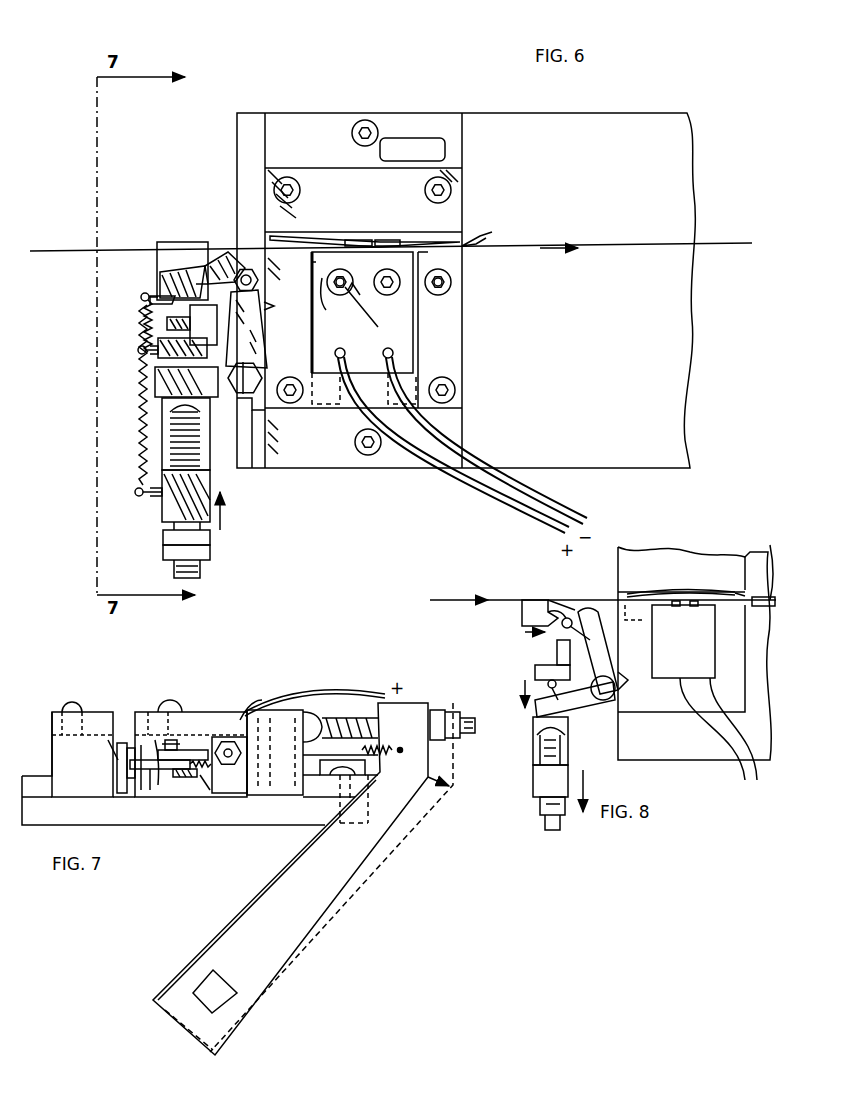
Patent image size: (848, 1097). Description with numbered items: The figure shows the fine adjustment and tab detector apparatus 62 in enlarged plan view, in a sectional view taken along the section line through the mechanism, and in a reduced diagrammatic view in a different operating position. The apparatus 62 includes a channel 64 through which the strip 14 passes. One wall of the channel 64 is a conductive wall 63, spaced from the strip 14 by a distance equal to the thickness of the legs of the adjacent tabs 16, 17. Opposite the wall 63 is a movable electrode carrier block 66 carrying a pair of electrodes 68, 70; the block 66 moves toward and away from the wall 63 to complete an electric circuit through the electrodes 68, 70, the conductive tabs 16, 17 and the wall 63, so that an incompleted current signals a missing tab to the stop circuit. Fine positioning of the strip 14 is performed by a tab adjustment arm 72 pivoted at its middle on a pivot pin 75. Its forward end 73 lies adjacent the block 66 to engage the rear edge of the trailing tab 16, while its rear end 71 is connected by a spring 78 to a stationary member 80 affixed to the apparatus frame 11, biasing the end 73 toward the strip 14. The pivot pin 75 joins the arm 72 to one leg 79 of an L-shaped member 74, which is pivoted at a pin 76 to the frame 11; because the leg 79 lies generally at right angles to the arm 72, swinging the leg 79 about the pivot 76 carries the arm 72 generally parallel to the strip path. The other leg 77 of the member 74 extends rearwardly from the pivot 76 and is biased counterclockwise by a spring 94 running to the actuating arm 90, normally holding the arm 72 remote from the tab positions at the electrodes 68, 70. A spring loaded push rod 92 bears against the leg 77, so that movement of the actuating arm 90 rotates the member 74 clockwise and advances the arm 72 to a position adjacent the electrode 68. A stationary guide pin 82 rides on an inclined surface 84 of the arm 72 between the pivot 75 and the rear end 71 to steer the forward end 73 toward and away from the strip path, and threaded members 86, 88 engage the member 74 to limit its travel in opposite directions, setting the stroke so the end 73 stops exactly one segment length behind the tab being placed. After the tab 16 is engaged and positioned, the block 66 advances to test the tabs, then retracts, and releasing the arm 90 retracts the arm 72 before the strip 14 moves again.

In FIG. 6, the apparatus frame 11 is at (252, 455).
In FIG. 7, the apparatus frame 11 is at (284, 815).
In FIG. 6, the strip 14 is at (618, 244).
In FIG. 7, the strip 14 is at (118, 750).
In FIG. 8, the strip 14 is at (442, 604).
In FIG. 6, the tab 16 is at (356, 240).
In FIG. 7, the tab 16 is at (128, 792).
In FIG. 8, the tab 16 is at (760, 597).
In FIG. 6, the tab 17 is at (380, 240).
In FIG. 8, the tab 17 is at (770, 570).
In FIG. 6, the fine adjustment and tab detector apparatus 62 is at (485, 108).
In FIG. 7, the fine adjustment and tab detector apparatus 62 is at (190, 702).
In FIG. 8, the fine adjustment and tab detector apparatus 62 is at (687, 545).
In FIG. 6, the conductive wall 63 is at (345, 246).
In FIG. 7, the conductive wall 63 is at (117, 756).
In FIG. 8, the conductive wall 63 is at (698, 594).
In FIG. 6, the channel 64 is at (475, 242).
In FIG. 7, the channel 64 is at (125, 735).
In FIG. 8, the channel 64 is at (738, 592).
In FIG. 6, the movable electrode carrier block 66 is at (412, 300).
In FIG. 7, the movable electrode carrier block 66 is at (138, 745).
In FIG. 8, the movable electrode carrier block 66 is at (694, 664).
In FIG. 6, the electrode 68 is at (354, 276).
In FIG. 7, the electrode 68 is at (156, 745).
In FIG. 8, the electrode 68 is at (675, 608).
In FIG. 6, the electrode 70 is at (410, 258).
In FIG. 8, the electrode 70 is at (693, 608).
In FIG. 6, the rear end of tab adjustment arm 71 is at (150, 294).
In FIG. 7, the rear end of tab adjustment arm 71 is at (176, 780).
In FIG. 8, the rear end of tab adjustment arm 71 is at (520, 622).
In FIG. 6, the tab adjustment arm 72 is at (188, 272).
In FIG. 7, the tab adjustment arm 72 is at (160, 770).
In FIG. 8, the tab adjustment arm 72 is at (566, 604).
In FIG. 6, the forward end of tab adjustment arm 73 is at (324, 294).
In FIG. 7, the forward end of tab adjustment arm 73 is at (145, 792).
In FIG. 8, the forward end of tab adjustment arm 73 is at (636, 590).
In FIG. 6, the L-shaped member 74 is at (270, 308).
In FIG. 7, the L-shaped member 74 is at (212, 790).
In FIG. 8, the L-shaped member 74 is at (624, 680).
In FIG. 6, the pivot pin 75 is at (248, 266).
In FIG. 7, the pivot pin 75 is at (176, 744).
In FIG. 8, the pivot pin 75 is at (585, 612).
In FIG. 6, the pivot pin 76 is at (243, 398).
In FIG. 7, the pivot pin 76 is at (298, 770).
In FIG. 8, the pivot pin 76 is at (612, 700).
In FIG. 6, the other leg of L-shaped member 77 is at (188, 393).
In FIG. 7, the other leg of L-shaped member 77 is at (280, 710).
In FIG. 8, the other leg of L-shaped member 77 is at (580, 712).
In FIG. 6, the spring 78 is at (142, 332).
In FIG. 7, the spring 78 is at (214, 768).
In FIG. 6, the leg of L-shaped member 79 is at (266, 342).
In FIG. 7, the leg of L-shaped member 79 is at (236, 740).
In FIG. 8, the leg of L-shaped member 79 is at (610, 652).
In FIG. 6, the stationary member 80 is at (150, 361).
In FIG. 7, the stationary member 80 is at (235, 775).
In FIG. 8, the stationary member 80 is at (535, 670).
In FIG. 6, the stationary guide pin 82 is at (222, 276).
In FIG. 7, the stationary guide pin 82 is at (190, 778).
In FIG. 8, the stationary guide pin 82 is at (598, 660).
In FIG. 6, the inclined surface 84 is at (218, 262).
In FIG. 8, the inclined surface 84 is at (526, 600).
In FIG. 6, the threaded member 86 is at (228, 384).
In FIG. 7, the threaded member 86 is at (236, 740).
In FIG. 8, the threaded member 86 is at (551, 702).
In FIG. 6, the threaded member 88 is at (217, 332).
In FIG. 7, the threaded member 88 is at (205, 750).
In FIG. 8, the threaded member 88 is at (557, 650).
In FIG. 6, the actuating arm 90 is at (200, 470).
In FIG. 7, the actuating arm 90 is at (297, 916).
In FIG. 8, the actuating arm 90 is at (533, 780).
In FIG. 6, the spring loaded push rod 92 is at (200, 452).
In FIG. 7, the spring loaded push rod 92 is at (342, 718).
In FIG. 8, the spring loaded push rod 92 is at (562, 752).
In FIG. 6, the spring 94 is at (130, 434).
In FIG. 7, the spring 94 is at (398, 746).